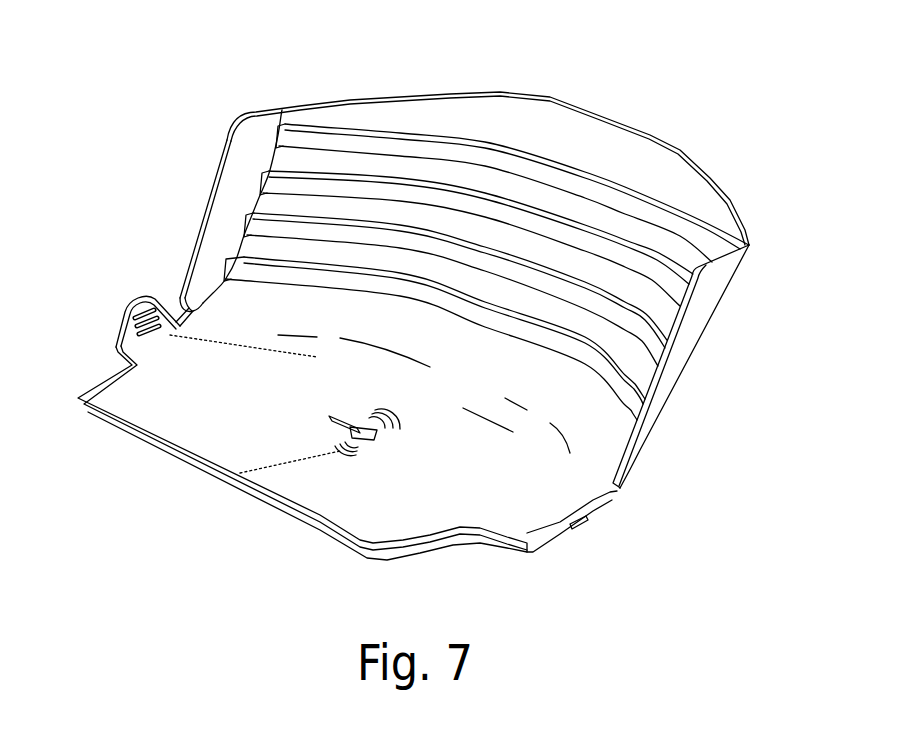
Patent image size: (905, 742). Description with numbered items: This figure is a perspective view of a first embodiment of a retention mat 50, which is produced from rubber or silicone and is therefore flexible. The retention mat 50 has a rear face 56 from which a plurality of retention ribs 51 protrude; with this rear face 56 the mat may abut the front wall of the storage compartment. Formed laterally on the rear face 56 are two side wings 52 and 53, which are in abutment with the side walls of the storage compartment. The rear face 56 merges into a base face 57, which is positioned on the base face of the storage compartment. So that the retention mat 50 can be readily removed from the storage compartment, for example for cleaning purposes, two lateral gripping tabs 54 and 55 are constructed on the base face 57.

The retention mat 50 is at (174, 223).
The retention ribs 51 is at (455, 148).
The side wing 52 is at (253, 147).
The side wing 53 is at (693, 332).
The lateral gripping tab 54 is at (118, 327).
The lateral gripping tab 55 is at (548, 540).
The rear face 56 is at (593, 137).
The base face 57 is at (210, 427).